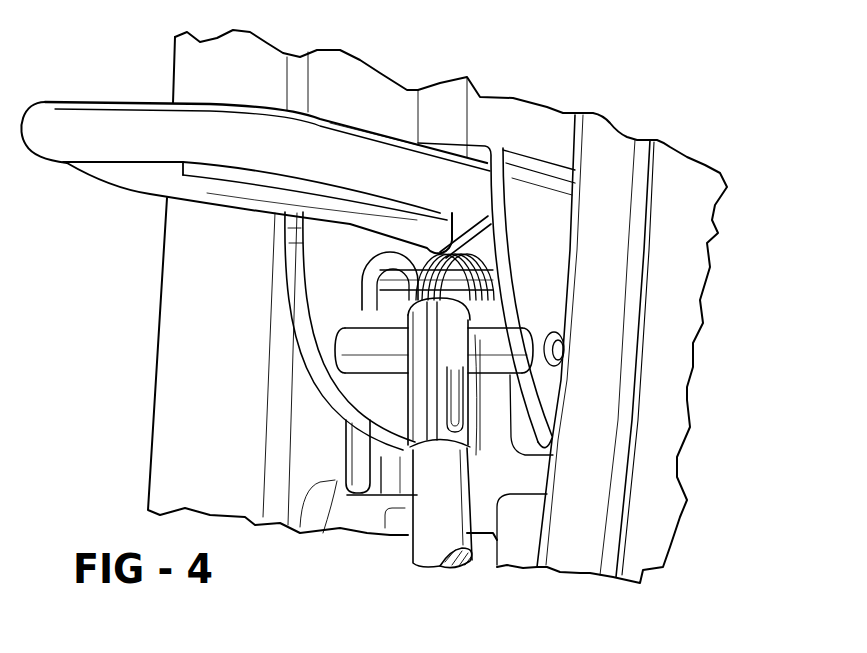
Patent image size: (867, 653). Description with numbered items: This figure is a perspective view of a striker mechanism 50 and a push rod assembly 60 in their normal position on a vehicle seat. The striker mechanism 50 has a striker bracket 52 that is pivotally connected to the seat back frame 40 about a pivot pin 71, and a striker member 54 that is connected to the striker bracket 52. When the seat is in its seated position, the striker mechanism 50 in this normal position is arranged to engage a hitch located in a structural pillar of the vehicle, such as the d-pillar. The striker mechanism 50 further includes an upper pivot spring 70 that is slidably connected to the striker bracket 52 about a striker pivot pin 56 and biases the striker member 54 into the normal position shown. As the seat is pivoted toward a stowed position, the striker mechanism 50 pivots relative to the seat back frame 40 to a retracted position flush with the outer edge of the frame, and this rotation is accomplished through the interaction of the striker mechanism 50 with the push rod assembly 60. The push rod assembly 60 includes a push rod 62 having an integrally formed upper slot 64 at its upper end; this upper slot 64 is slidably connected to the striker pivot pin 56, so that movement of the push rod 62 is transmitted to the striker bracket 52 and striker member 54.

The seat back frame 40 is at (298, 45).
The striker mechanism 50 is at (337, 106).
The striker bracket 52 is at (529, 150).
The striker member 54 is at (83, 102).
The striker pivot pin 56 is at (370, 358).
The push rod assembly 60 is at (377, 540).
The push rod 62 is at (465, 488).
The upper slot 64 is at (455, 397).
The upper pivot spring 70 is at (360, 290).
The pivot pin 71 is at (485, 262).